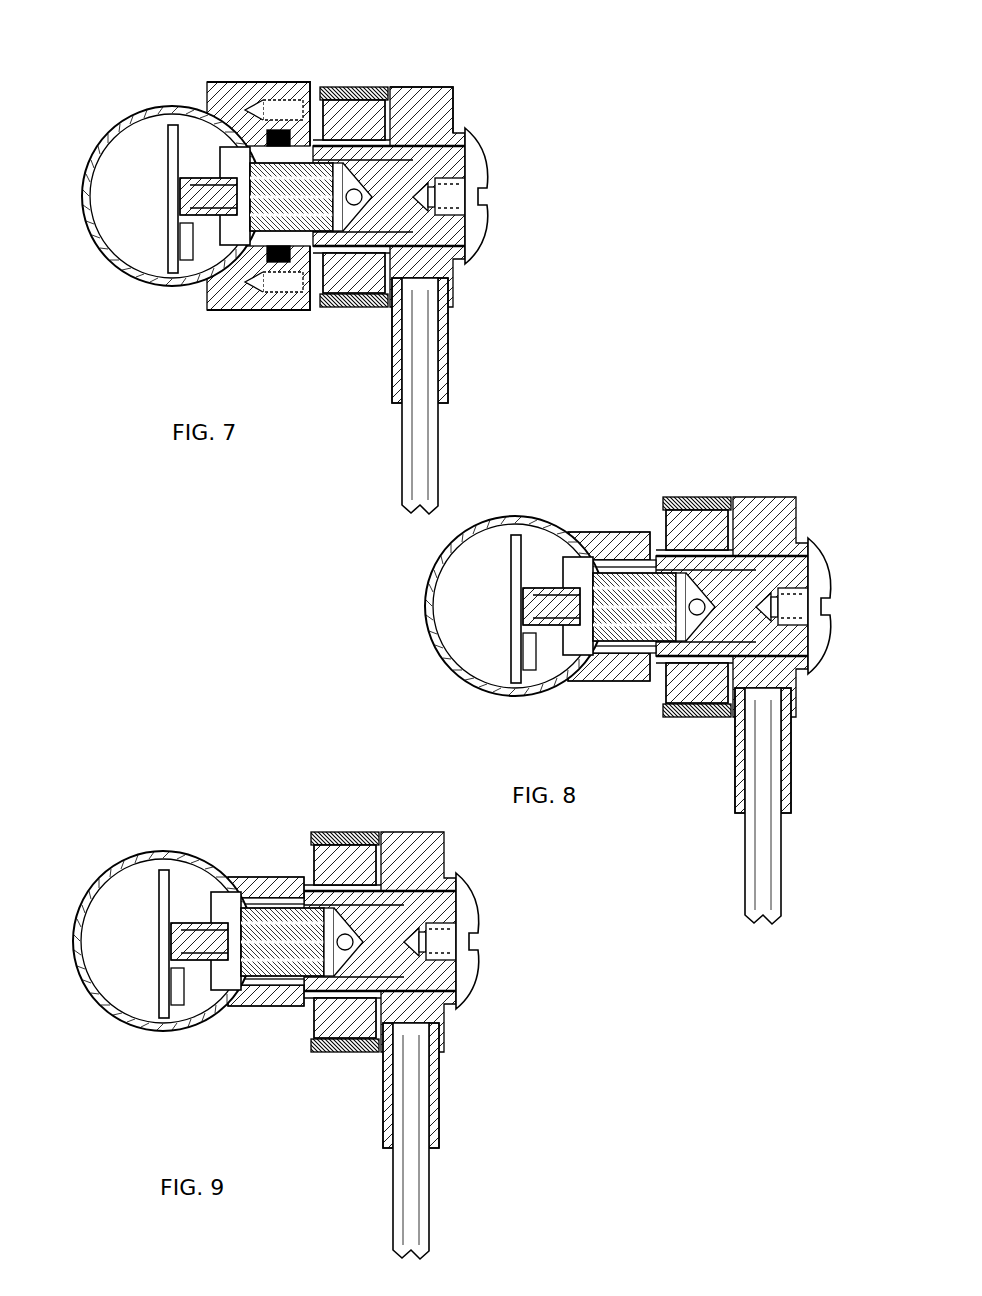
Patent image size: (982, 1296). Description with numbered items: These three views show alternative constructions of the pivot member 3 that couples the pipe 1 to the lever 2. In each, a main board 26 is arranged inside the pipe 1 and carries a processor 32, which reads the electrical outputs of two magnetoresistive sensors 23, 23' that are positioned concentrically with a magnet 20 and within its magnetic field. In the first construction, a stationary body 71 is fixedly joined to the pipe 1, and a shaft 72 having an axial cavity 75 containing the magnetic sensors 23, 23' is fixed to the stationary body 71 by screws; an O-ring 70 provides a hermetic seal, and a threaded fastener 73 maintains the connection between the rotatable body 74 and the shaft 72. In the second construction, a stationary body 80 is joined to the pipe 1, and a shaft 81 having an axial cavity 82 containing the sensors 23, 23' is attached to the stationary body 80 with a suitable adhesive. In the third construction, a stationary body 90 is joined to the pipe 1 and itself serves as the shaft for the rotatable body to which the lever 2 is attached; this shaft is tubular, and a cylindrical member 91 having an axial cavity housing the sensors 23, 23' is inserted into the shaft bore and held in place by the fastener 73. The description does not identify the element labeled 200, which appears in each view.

In FIG. 7, the pipe 1 is at (123, 277).
In FIG. 8, the pipe 1 is at (515, 623).
In FIG. 9, the pipe 1 is at (162, 960).
In FIG. 7, the lever 2 is at (410, 430).
In FIG. 8, the lever 2 is at (737, 806).
In FIG. 9, the lever 2 is at (382, 1141).
In FIG. 7, the pivot member 3 is at (466, 41).
In FIG. 8, the pivot member 3 is at (760, 553).
In FIG. 9, the pivot member 3 is at (421, 980).
In FIG. 7, the magnet 20 is at (363, 277).
In FIG. 8, the magnet 20 is at (672, 645).
In FIG. 9, the magnet 20 is at (319, 982).
In FIG. 7, the magnetoresistive sensor 23 is at (330, 204).
In FIG. 8, the magnetoresistive sensor 23 is at (673, 614).
In FIG. 9, the magnetoresistive sensor 23 is at (321, 946).
In FIG. 7, the magnetoresistive sensor 23' is at (439, 212).
In FIG. 8, the magnetoresistive sensor 23' is at (782, 622).
In FIG. 9, the magnetoresistive sensor 23' is at (430, 953).
In FIG. 7, the main board 26 is at (170, 163).
In FIG. 8, the main board 26 is at (490, 609).
In FIG. 9, the main board 26 is at (139, 944).
In FIG. 7, the processor 32 is at (195, 250).
In FIG. 8, the processor 32 is at (503, 694).
In FIG. 9, the processor 32 is at (151, 1028).
In FIG. 7, the O-ring 70 is at (232, 100).
In FIG. 7, the stationary body 71 is at (207, 95).
In FIG. 7, the shaft 72 is at (388, 160).
In FIG. 7, the threaded fastener 73 is at (477, 173).
In FIG. 8, the threaded fastener 73 is at (836, 590).
In FIG. 9, the threaded fastener 73 is at (481, 920).
In FIG. 7, the rotatable body 74 is at (425, 110).
In FIG. 7, the axial cavity 75 is at (280, 107).
In FIG. 8, the stationary body 80 is at (590, 578).
In FIG. 8, the shaft 81 is at (735, 586).
In FIG. 8, the axial cavity 82 is at (648, 694).
In FIG. 9, the stationary body 90 is at (249, 908).
In FIG. 9, the cylindrical member 91 is at (380, 921).
In FIG. 7, the ring 200 is at (338, 88).
In FIG. 8, the ring 200 is at (664, 588).
In FIG. 9, the ring 200 is at (318, 921).